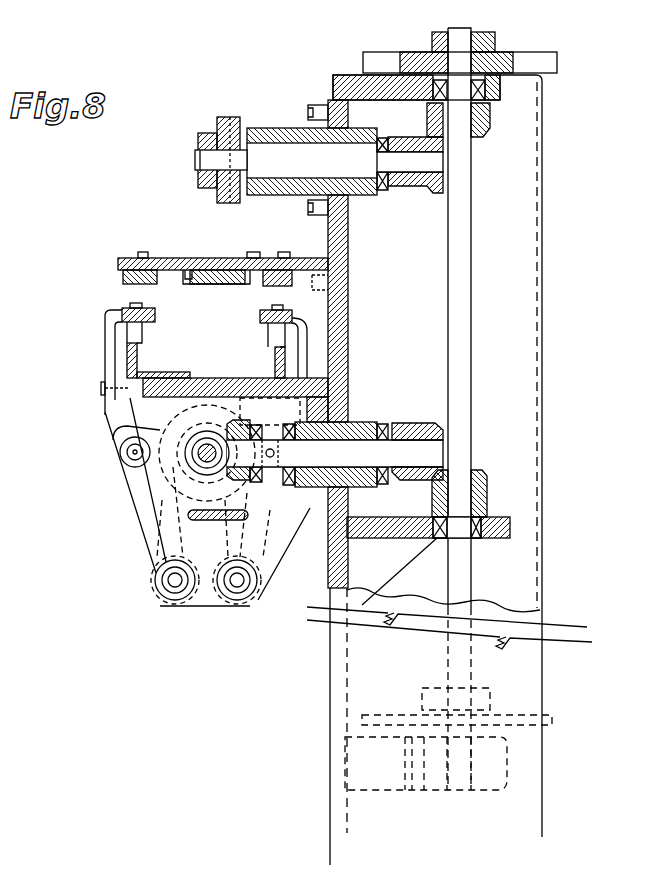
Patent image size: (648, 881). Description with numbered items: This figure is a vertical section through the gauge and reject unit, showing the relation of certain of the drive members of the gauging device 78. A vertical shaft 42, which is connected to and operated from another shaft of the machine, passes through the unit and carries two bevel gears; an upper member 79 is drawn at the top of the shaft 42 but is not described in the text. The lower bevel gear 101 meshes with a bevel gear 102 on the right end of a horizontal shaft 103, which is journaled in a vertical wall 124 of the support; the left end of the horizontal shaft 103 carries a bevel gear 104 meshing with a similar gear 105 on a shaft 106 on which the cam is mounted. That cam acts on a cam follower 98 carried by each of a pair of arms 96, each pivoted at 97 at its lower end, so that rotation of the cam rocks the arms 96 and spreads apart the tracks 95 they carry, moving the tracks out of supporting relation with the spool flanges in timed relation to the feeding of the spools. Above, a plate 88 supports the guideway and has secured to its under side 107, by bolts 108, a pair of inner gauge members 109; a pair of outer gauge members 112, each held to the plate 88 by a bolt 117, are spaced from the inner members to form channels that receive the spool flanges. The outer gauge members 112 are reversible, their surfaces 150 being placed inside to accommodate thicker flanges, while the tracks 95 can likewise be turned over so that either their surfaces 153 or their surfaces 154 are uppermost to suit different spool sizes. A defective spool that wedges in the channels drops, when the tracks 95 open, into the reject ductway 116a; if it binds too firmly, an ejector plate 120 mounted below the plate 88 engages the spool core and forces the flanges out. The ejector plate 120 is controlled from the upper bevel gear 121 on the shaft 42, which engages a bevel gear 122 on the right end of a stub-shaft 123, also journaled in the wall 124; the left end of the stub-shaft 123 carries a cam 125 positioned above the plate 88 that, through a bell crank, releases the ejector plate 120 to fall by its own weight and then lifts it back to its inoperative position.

The shaft 42 is at (465, 362).
The gauging device 78 is at (110, 304).
The plate 79 is at (552, 62).
The plate 88 is at (178, 262).
The tracks 95 is at (143, 324).
The arms 96 is at (106, 318).
The pivot 97 is at (172, 581).
The cam follower 98 is at (117, 430).
The bevel gear 101 is at (487, 475).
The bevel gear 102 is at (436, 423).
The horizontal shaft 103 is at (425, 452).
The bevel gear 104 is at (228, 484).
The bevel gear 105 is at (118, 406).
The shaft 106 is at (196, 458).
The under side 107 is at (138, 258).
The bolts 108 is at (253, 252).
The inner gauge members 109 is at (189, 273).
The outer gauge members 112 is at (123, 277).
The reject ductway 116a is at (172, 378).
The bolt 117 is at (120, 268).
The ejector plate 120 is at (230, 284).
The bevel gear 121 is at (487, 133).
The bevel gear 122 is at (430, 193).
The stub-shaft 123 is at (430, 165).
The vertical wall 124 is at (350, 320).
The cam 125 is at (232, 203).
The surfaces 150 is at (118, 272).
The surfaces 153 is at (134, 303).
The surfaces 154 is at (150, 323).